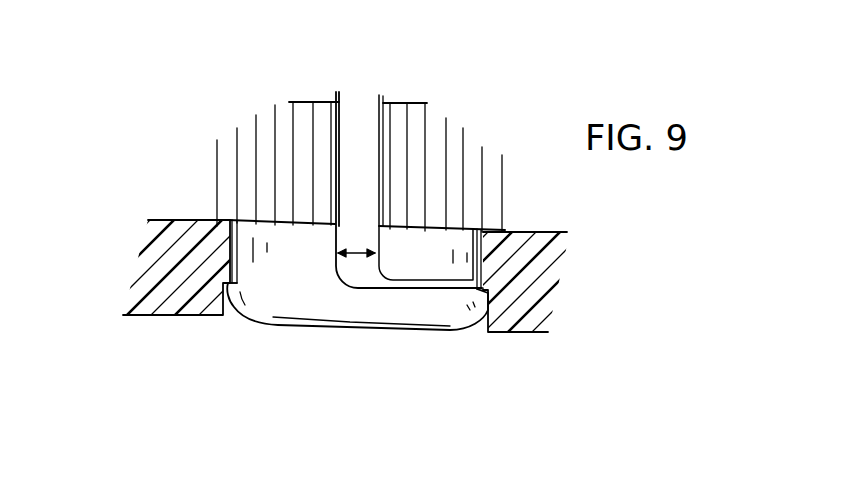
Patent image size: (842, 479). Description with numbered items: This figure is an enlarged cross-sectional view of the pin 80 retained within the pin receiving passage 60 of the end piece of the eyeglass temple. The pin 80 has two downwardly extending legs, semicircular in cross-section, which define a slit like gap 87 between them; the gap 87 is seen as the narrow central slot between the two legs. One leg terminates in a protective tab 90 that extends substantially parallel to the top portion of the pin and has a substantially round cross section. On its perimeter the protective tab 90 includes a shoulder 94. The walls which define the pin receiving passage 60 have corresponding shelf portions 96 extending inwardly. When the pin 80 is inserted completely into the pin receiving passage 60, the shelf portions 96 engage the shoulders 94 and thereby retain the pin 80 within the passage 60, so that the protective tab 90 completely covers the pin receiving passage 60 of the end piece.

The pin receiving passage 60 is at (478, 329).
The pin 80 is at (507, 75).
The slit like gap 87 is at (357, 247).
The protective tab 90 is at (345, 328).
The shoulder 94 is at (202, 300).
The shelf portions 96 is at (227, 280).